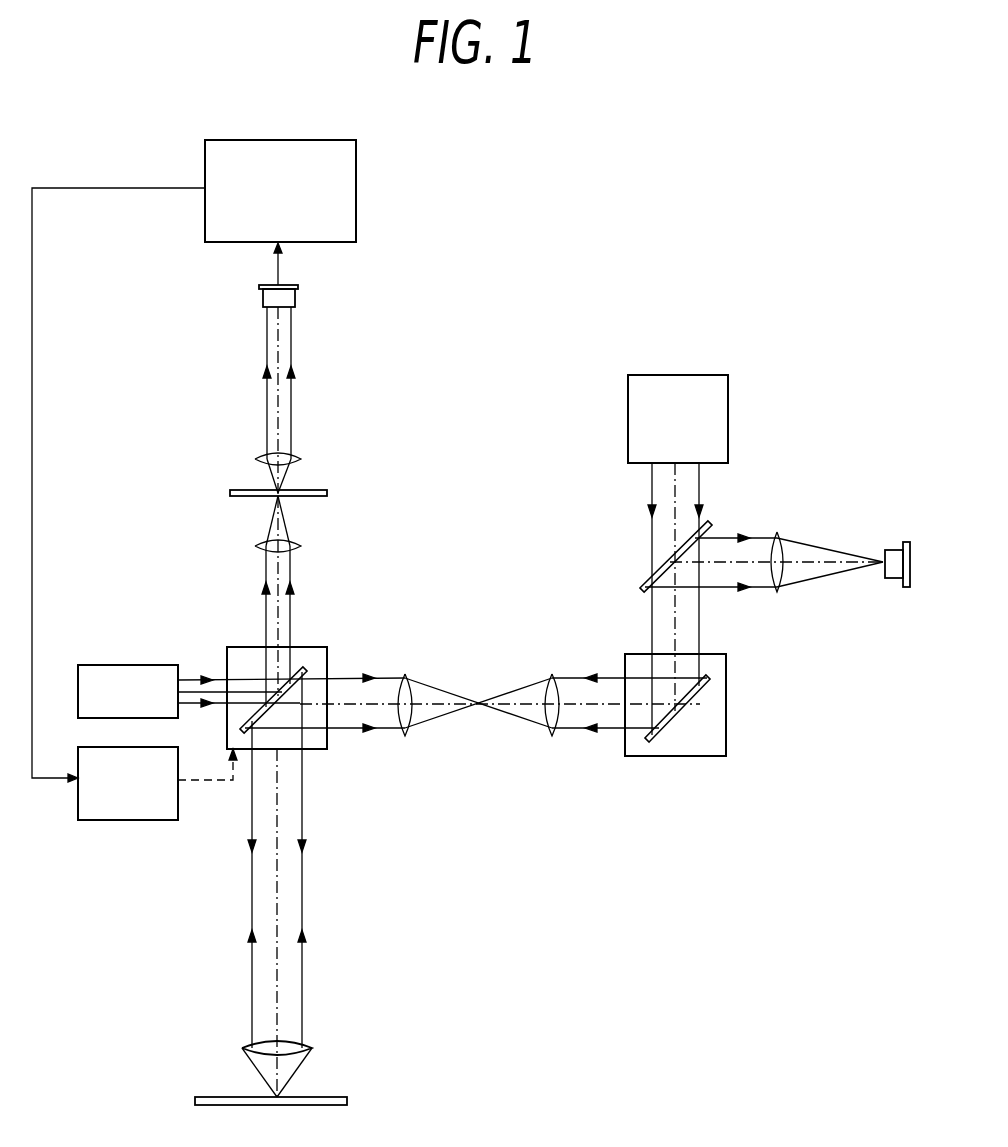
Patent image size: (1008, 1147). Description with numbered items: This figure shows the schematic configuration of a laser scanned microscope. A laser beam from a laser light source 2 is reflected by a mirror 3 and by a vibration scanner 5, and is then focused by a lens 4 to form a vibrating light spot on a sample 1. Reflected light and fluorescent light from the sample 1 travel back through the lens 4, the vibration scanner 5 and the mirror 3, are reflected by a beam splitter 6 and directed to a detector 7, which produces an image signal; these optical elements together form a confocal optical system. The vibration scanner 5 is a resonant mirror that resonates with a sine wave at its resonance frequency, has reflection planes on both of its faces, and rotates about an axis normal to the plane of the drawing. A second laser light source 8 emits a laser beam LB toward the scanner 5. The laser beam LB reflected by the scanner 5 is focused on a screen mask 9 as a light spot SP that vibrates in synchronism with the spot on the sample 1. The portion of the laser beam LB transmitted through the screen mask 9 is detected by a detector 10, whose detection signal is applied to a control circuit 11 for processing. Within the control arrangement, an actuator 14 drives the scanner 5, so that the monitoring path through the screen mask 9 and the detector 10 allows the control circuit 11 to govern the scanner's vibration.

The sample 1 is at (347, 1100).
The laser light source 2 is at (728, 415).
The mirror 3 is at (726, 700).
The lens 4 is at (313, 1050).
The vibration scanner 5 is at (304, 670).
The beam splitter 6 is at (642, 588).
The detector 7 is at (890, 550).
The laser light source 8 is at (113, 665).
The screen mask 9 is at (327, 492).
The detector 10 is at (298, 300).
The control circuit 11 is at (356, 195).
The actuator 14 is at (78, 760).
The light spot SP is at (262, 503).
The laser beam LB is at (189, 678).